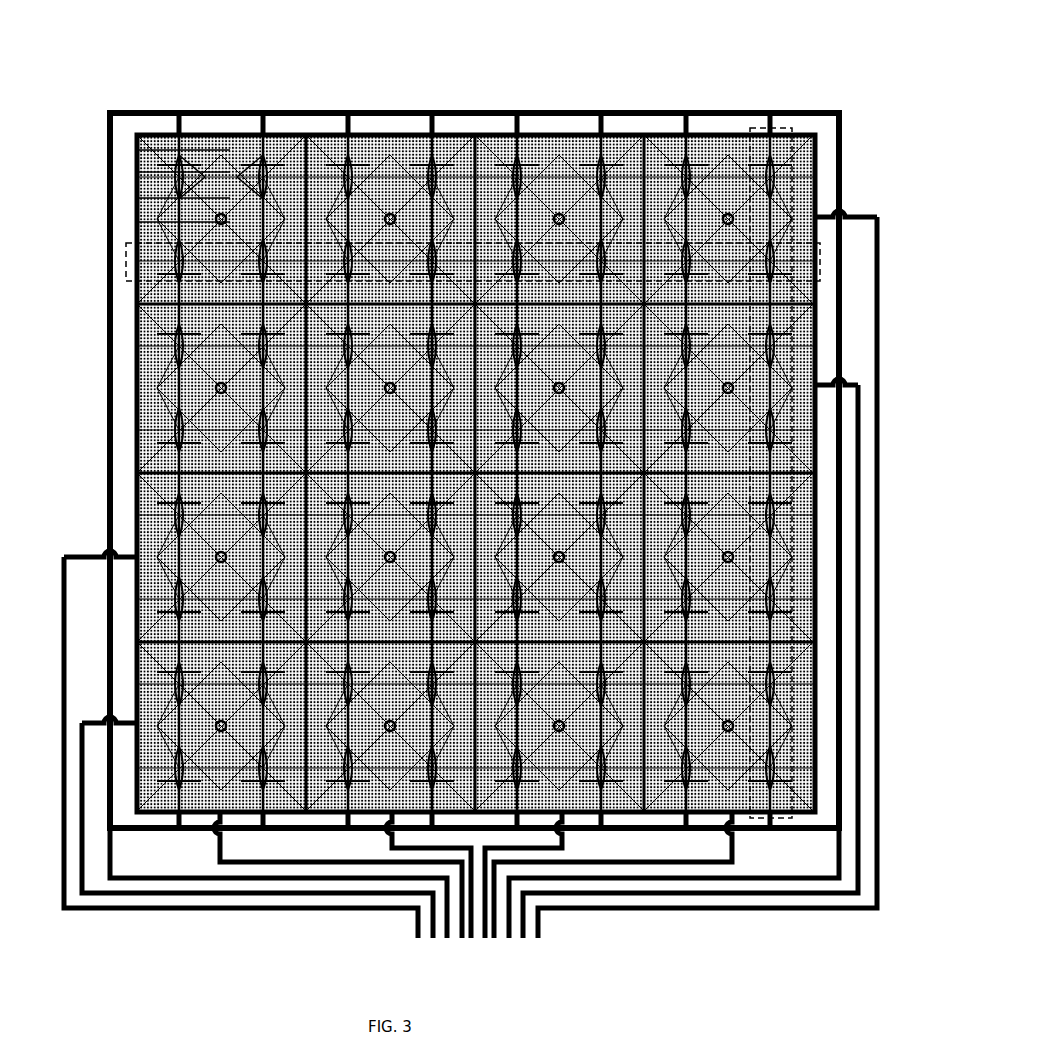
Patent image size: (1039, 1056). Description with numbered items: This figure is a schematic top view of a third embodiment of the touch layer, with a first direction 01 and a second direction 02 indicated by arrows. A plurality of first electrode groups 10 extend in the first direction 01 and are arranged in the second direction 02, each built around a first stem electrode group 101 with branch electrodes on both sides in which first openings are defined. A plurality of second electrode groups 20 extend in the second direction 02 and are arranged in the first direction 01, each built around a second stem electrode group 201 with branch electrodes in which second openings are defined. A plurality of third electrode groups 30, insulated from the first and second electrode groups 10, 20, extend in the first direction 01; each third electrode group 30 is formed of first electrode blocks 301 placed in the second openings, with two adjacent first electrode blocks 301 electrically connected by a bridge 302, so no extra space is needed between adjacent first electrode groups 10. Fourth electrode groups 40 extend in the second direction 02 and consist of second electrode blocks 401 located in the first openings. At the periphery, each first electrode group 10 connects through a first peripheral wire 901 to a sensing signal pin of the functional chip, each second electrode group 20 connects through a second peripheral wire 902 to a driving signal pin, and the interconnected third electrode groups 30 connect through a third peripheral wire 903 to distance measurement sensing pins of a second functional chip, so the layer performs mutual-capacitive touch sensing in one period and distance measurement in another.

The first electrode group 10 is at (389, 138).
The first stem electrode group 101 is at (557, 172).
The second electrode group 20 is at (142, 387).
The second stem electrode group 201 is at (148, 555).
The third electrode group 30 is at (758, 128).
The first electrode block 301 is at (150, 150).
The bridge 302 is at (150, 172).
The fourth electrode group 40 is at (126, 262).
The second electrode block 401 is at (188, 175).
The first peripheral wire 901 is at (240, 868).
The second peripheral wire 902 is at (95, 897).
The third peripheral wire 903 is at (160, 883).
The first direction 01 is at (880, 130).
The second direction 02 is at (922, 80).